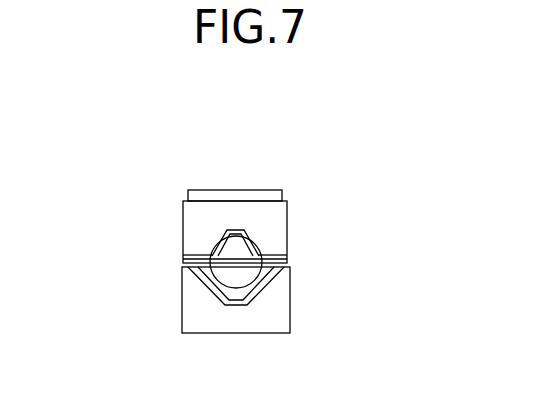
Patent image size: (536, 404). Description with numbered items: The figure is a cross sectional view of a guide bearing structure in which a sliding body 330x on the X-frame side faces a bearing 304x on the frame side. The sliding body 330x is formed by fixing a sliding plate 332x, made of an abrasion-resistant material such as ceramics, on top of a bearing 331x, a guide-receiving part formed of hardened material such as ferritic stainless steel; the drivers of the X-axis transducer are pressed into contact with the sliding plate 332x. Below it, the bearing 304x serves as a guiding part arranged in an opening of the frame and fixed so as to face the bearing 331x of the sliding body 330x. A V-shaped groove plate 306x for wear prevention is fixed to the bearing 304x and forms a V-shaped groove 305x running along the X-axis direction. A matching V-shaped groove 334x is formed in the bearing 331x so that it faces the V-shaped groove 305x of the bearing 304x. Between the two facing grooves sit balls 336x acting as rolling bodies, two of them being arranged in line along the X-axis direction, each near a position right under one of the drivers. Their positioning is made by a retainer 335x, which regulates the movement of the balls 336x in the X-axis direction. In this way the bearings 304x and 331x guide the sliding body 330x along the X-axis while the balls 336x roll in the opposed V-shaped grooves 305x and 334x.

The sliding body 330x is at (190, 212).
The bearing 331x is at (272, 213).
The sliding plate 332x is at (189, 191).
The V-shaped groove 334x is at (226, 250).
The retainer 335x is at (266, 257).
The ball 336x is at (206, 258).
The bearing 304x is at (258, 333).
The V-shaped groove 305x is at (203, 274).
The V-shaped groove plate 306x is at (268, 284).